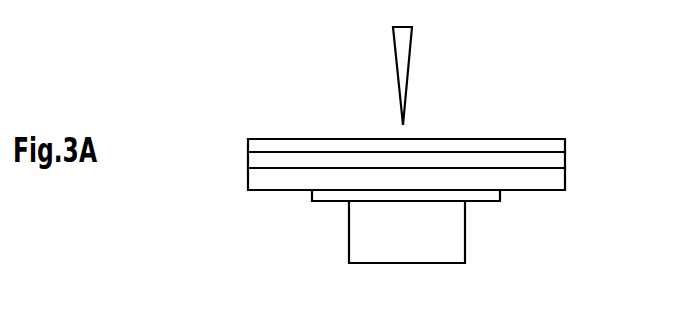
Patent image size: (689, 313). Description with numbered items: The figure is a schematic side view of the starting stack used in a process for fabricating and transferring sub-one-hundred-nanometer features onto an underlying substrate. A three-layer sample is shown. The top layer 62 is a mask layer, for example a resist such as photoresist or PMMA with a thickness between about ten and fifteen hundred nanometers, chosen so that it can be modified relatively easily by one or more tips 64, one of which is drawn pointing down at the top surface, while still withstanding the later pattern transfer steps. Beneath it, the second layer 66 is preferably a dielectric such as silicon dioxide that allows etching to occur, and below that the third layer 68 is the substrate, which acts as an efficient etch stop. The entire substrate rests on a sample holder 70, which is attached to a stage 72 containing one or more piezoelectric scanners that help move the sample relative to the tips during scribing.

The top layer 62 is at (558, 146).
The tip 64 is at (410, 58).
The second layer 66 is at (557, 160).
The third layer 68 is at (543, 182).
The sample holder 70 is at (487, 196).
The stage 72 is at (455, 252).